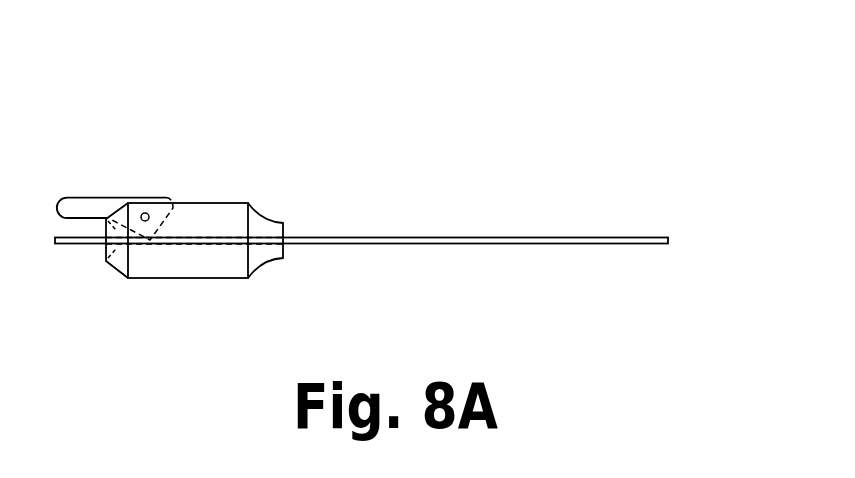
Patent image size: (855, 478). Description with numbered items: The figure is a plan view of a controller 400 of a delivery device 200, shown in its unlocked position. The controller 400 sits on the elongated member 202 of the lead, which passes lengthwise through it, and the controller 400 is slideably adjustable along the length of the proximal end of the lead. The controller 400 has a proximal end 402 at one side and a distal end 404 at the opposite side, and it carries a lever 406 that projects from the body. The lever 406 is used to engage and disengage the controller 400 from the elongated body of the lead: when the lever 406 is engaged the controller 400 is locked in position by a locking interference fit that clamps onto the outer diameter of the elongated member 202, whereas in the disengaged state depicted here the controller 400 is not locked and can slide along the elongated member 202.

The delivery device 200 is at (449, 98).
The elongated member 202 is at (448, 230).
The controller 400 is at (206, 278).
The proximal end 402 is at (93, 250).
The distal end 404 is at (289, 247).
The lever 406 is at (100, 198).